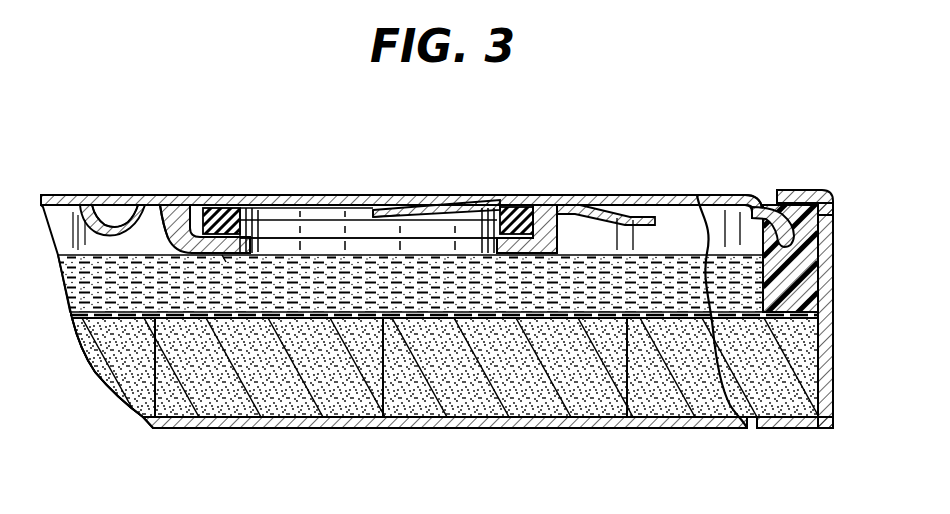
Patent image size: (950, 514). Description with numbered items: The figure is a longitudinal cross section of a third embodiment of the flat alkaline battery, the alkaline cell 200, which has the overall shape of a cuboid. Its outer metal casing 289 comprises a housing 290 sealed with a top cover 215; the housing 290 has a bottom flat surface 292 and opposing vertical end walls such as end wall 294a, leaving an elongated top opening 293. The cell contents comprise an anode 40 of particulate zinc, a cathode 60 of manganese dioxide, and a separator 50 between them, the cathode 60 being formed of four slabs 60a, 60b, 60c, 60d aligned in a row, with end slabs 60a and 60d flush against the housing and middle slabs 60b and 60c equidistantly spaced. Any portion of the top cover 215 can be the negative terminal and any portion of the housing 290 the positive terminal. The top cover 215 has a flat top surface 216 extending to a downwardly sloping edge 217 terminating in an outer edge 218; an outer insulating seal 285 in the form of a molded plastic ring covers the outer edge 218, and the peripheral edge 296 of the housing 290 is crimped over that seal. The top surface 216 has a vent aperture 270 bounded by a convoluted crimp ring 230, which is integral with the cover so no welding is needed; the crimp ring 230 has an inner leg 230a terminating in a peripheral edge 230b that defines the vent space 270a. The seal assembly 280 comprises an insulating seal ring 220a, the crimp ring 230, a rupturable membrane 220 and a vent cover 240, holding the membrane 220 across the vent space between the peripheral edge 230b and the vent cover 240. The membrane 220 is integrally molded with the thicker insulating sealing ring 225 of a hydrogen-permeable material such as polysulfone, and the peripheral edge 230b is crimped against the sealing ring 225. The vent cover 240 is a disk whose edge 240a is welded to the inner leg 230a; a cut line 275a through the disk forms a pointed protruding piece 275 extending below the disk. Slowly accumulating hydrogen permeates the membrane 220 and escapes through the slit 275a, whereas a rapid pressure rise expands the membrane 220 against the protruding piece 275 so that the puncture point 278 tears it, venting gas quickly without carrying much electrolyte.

The flat battery (alkaline cell) 200 is at (114, 108).
The anode 40 is at (70, 295).
The separator 50 is at (252, 318).
The cathode 60 is at (458, 400).
The MnO2 slab 60a is at (123, 353).
The MnO2 slab 60b is at (335, 400).
The MnO2 slab 60c is at (568, 400).
The MnO2 slab 60d is at (663, 400).
The top cover 215 is at (645, 205).
The flat top surface 216 is at (690, 200).
The downwardly sloping edge 217 is at (765, 196).
The outer edge 218 is at (805, 255).
The rupturable membrane 220 is at (345, 205).
The insulating seal ring 220a is at (218, 222).
The insulating sealing ring 225 is at (535, 205).
The crimp ring (convoluted edge) 230 is at (100, 232).
The inner leg 230a is at (118, 210).
The peripheral edge 230b is at (225, 255).
The vent cover 240 is at (208, 204).
The edge of vent cover 240a is at (146, 200).
The vent aperture 270 is at (280, 213).
The vent space 270a is at (300, 243).
The pointed protruding piece 275 is at (455, 205).
The cut line (slit) 275a is at (377, 210).
The puncture point 278 is at (402, 212).
The seal assembly 280 is at (582, 205).
The outer insulating seal 285 is at (812, 232).
The outer metal casing 289 is at (787, 430).
The housing 290 is at (835, 360).
The bottom flat surface 292 is at (707, 433).
The top opening 293 is at (758, 200).
The vertical end wall 294a is at (833, 283).
The peripheral edge of housing 296 is at (790, 192).